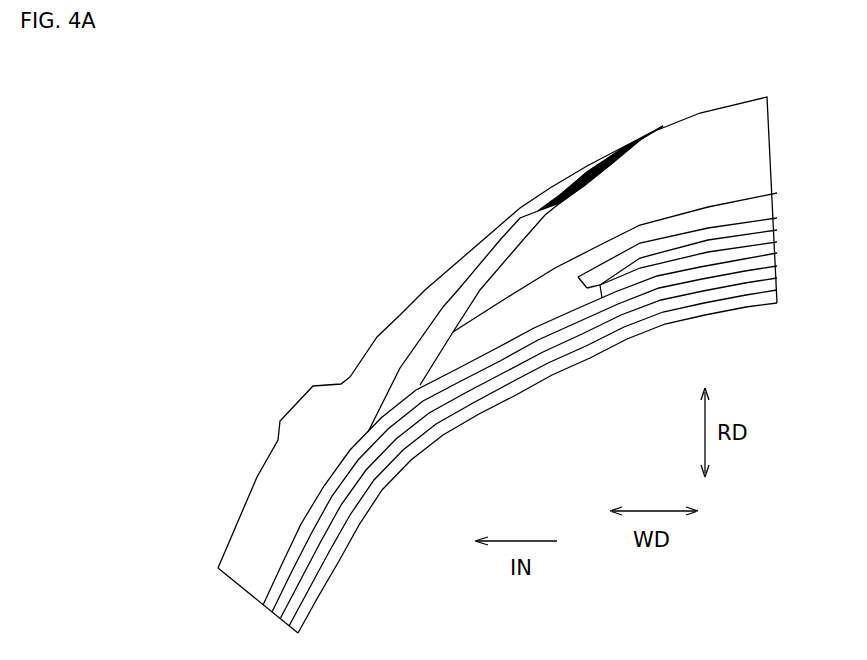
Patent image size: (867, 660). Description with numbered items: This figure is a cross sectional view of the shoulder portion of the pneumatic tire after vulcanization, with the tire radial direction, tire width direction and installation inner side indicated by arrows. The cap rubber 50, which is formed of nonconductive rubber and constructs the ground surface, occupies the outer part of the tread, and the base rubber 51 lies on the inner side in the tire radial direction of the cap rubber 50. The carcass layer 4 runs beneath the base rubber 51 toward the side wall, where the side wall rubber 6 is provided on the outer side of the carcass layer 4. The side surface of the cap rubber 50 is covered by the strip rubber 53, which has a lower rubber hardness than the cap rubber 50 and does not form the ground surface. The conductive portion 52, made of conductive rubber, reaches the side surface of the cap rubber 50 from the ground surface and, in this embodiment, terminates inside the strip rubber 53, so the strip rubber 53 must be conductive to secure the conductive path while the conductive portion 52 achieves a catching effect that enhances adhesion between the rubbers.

The carcass layer 4 is at (352, 485).
The side wall rubber 6 is at (257, 507).
The cap rubber 50 is at (757, 131).
The base rubber 51 is at (512, 312).
The conductive portion 52 is at (630, 148).
The strip rubber 53 is at (443, 307).